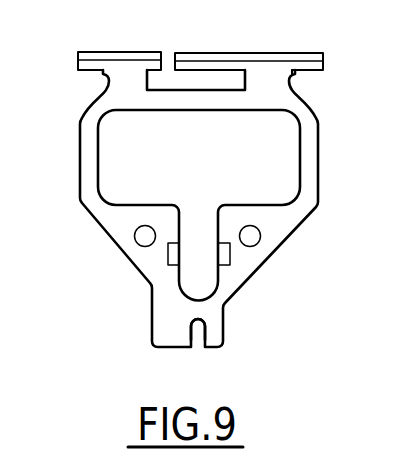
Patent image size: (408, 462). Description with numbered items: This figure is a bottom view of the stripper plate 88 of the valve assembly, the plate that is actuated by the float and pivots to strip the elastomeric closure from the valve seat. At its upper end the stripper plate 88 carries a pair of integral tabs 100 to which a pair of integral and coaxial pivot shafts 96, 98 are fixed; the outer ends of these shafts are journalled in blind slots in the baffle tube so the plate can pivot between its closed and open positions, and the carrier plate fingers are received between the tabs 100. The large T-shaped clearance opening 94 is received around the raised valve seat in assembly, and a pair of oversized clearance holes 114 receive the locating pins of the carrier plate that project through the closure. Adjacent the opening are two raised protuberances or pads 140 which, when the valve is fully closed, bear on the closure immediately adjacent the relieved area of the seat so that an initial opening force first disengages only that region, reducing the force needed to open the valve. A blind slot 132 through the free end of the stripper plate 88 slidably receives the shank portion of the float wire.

The stripper plate 88 is at (72, 128).
The pivot shaft 98 is at (100, 53).
The tabs 100 is at (268, 72).
The pivot shaft 96 is at (320, 54).
The T-shaped clearance opening 94 is at (294, 142).
The oversized clearance holes 114 is at (250, 231).
The pads 140 is at (168, 262).
The blind slot 132 is at (197, 343).